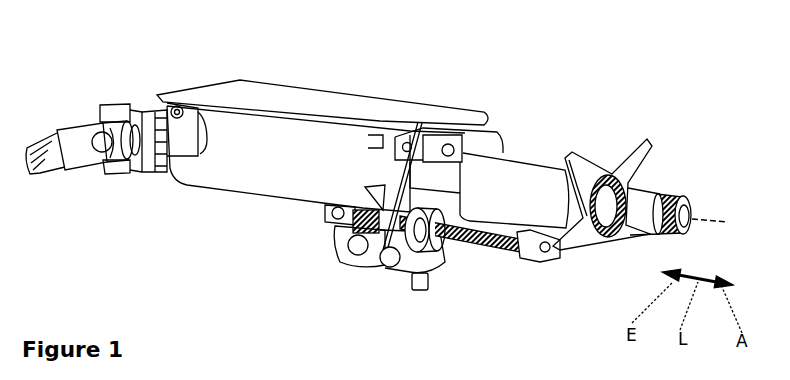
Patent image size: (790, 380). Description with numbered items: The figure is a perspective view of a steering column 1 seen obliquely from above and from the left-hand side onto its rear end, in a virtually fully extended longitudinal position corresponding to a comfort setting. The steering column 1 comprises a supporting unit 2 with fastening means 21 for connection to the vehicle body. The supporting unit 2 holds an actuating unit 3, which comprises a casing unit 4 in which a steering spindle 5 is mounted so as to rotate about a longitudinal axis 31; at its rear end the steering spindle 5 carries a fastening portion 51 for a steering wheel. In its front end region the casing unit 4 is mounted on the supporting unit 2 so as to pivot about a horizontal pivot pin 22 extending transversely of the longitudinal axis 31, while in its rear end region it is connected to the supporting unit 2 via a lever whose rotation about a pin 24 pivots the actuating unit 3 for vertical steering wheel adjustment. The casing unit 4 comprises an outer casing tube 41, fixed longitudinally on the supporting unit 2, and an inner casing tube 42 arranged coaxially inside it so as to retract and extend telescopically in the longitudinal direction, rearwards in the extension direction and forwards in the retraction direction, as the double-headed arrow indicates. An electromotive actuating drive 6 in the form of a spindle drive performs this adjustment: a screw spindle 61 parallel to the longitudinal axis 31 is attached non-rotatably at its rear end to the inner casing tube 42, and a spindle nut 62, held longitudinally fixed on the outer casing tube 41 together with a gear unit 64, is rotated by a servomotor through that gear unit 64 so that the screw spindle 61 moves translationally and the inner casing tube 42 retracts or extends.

The steering column 1 is at (420, 60).
The supporting unit 2 is at (362, 105).
The actuating unit 3 is at (230, 207).
The casing unit 4 is at (273, 215).
The steering spindle 5 is at (635, 202).
The electromotive actuating drive 6 is at (372, 277).
The fastening means 21 is at (238, 80).
The pivot pin 22 is at (165, 106).
The pin 24 is at (413, 135).
The longitudinal axis 31 is at (722, 220).
The outer casing tube 41 is at (272, 140).
The inner casing tube 42 is at (532, 175).
The fastening portion 51 is at (678, 198).
The screw spindle 61 is at (500, 253).
The spindle nut 62 is at (443, 273).
The gear unit 64 is at (394, 262).